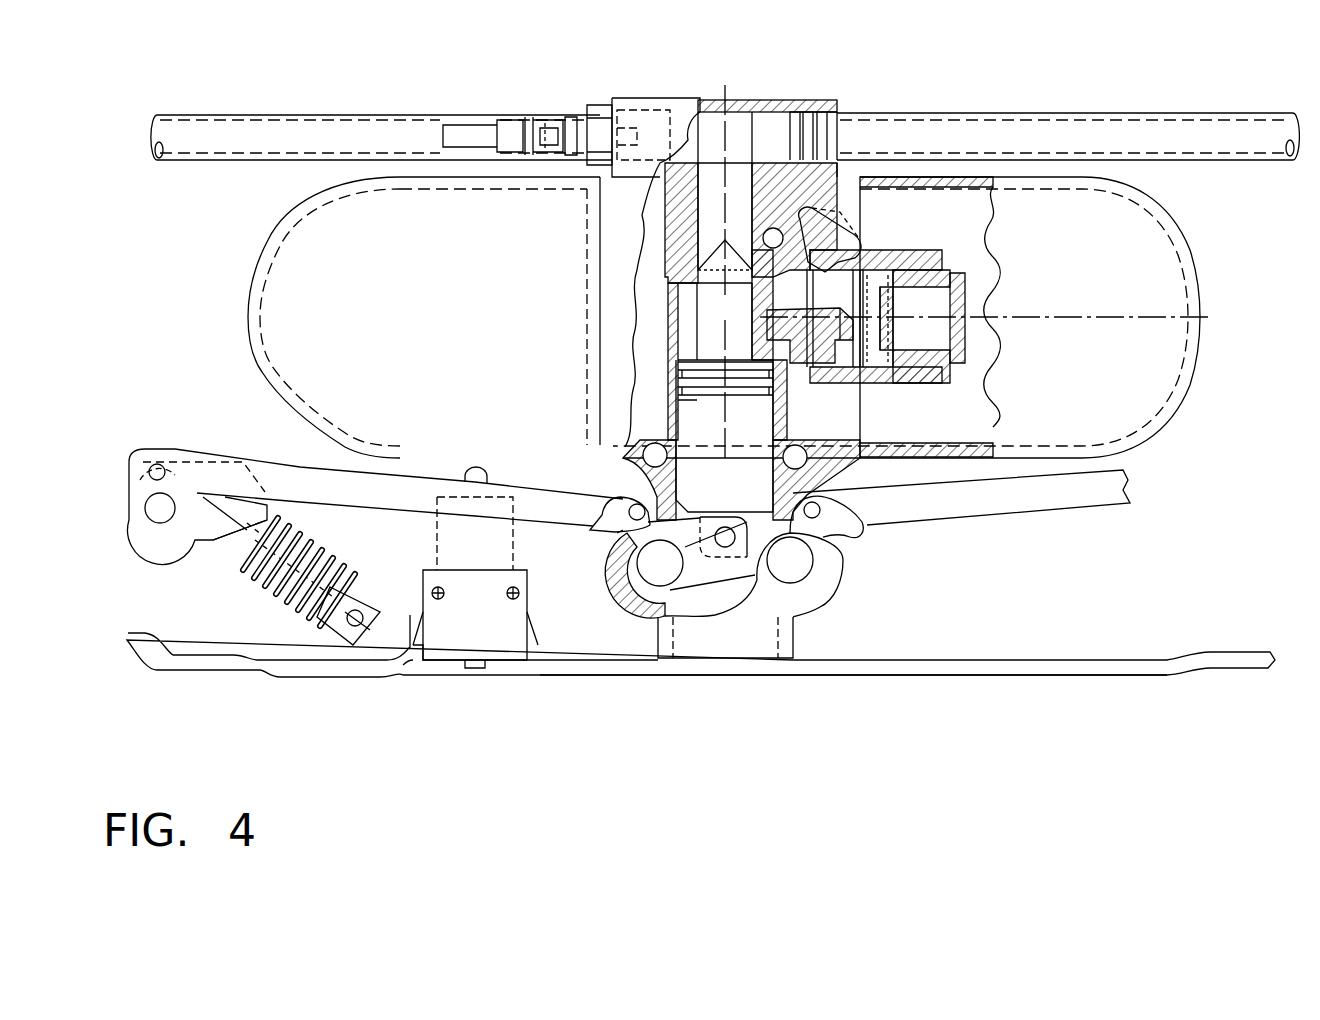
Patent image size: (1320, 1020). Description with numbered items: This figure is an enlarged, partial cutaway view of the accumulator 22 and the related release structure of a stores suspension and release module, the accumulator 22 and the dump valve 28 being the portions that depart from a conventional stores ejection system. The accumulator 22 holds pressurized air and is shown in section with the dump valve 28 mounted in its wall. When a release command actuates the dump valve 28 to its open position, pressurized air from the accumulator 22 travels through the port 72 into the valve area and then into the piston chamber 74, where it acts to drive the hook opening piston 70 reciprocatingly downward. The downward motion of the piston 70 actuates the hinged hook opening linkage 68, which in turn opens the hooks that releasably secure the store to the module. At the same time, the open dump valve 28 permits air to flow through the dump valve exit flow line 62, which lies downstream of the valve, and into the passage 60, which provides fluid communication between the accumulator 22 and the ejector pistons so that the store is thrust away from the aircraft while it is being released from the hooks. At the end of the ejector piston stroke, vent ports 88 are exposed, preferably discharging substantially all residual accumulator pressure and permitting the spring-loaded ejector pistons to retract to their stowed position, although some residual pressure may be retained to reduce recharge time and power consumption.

The accumulator 22 is at (387, 304).
The dump valve 28 is at (880, 312).
The passage 60 is at (345, 128).
The dump valve exit flow line 62 is at (735, 165).
The hook opening linkage 68 is at (300, 483).
The hook opening piston 70 is at (757, 417).
The port 72 is at (840, 375).
The piston chamber 74 is at (685, 313).
The vent port 88 is at (842, 247).